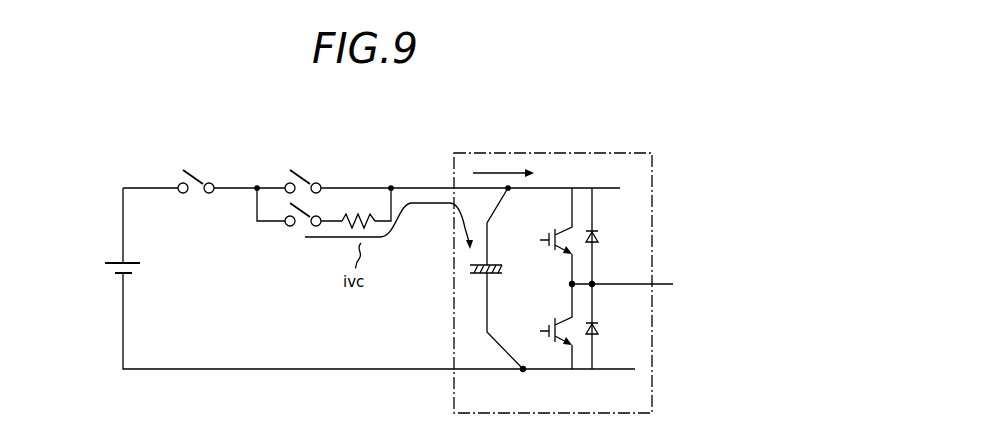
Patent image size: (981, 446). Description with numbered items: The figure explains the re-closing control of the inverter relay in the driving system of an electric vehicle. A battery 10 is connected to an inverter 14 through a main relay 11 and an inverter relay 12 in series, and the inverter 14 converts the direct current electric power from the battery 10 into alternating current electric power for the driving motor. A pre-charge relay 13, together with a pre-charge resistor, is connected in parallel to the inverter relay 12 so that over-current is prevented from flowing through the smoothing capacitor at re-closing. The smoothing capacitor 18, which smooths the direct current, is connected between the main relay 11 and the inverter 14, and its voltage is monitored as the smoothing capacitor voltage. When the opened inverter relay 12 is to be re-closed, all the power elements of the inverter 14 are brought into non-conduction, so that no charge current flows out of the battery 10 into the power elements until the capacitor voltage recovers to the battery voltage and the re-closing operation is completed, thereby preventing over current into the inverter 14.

The battery 10 is at (117, 261).
The main relay 11 is at (208, 150).
The inverter relay 12 is at (310, 170).
The pre-charge relay 13 is at (284, 242).
The inverter 14 is at (630, 160).
The smoothing capacitor 18 is at (478, 277).